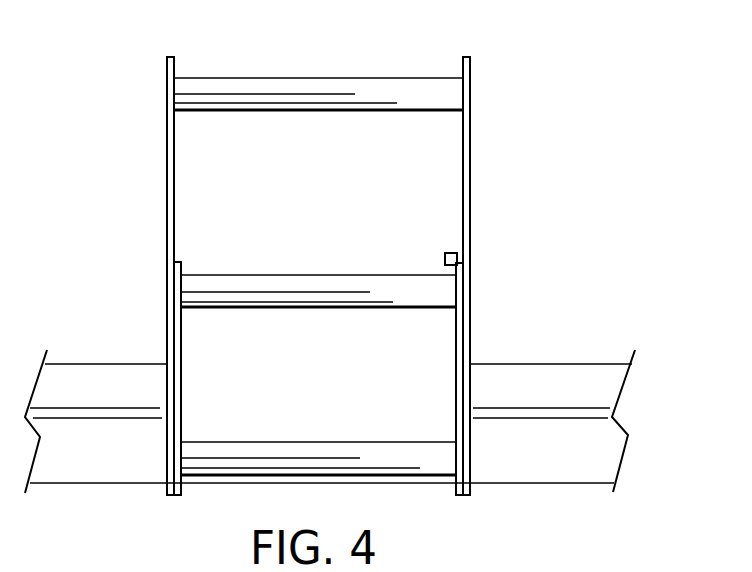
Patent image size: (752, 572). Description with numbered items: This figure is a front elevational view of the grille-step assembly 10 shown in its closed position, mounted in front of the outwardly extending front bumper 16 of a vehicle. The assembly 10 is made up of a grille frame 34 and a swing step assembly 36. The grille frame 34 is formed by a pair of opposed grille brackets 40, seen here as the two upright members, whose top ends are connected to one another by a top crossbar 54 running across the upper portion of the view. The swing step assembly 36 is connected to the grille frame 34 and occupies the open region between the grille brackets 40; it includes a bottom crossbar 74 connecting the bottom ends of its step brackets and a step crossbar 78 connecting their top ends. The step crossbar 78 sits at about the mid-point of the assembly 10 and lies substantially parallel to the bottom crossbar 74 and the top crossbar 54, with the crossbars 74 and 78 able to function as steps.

The grille-step assembly 10 is at (536, 70).
The front bumper 16 is at (550, 378).
The grille frame 34 is at (480, 60).
The swing step assembly 36 is at (309, 245).
The grille bracket 40 is at (179, 189).
The top crossbar 54 is at (319, 78).
The bottom crossbar 74 is at (276, 446).
The step crossbar 78 is at (293, 302).